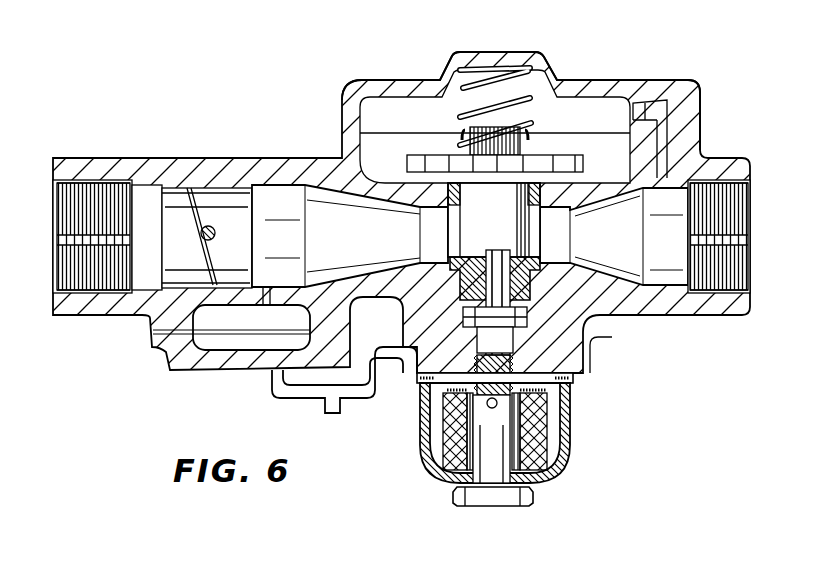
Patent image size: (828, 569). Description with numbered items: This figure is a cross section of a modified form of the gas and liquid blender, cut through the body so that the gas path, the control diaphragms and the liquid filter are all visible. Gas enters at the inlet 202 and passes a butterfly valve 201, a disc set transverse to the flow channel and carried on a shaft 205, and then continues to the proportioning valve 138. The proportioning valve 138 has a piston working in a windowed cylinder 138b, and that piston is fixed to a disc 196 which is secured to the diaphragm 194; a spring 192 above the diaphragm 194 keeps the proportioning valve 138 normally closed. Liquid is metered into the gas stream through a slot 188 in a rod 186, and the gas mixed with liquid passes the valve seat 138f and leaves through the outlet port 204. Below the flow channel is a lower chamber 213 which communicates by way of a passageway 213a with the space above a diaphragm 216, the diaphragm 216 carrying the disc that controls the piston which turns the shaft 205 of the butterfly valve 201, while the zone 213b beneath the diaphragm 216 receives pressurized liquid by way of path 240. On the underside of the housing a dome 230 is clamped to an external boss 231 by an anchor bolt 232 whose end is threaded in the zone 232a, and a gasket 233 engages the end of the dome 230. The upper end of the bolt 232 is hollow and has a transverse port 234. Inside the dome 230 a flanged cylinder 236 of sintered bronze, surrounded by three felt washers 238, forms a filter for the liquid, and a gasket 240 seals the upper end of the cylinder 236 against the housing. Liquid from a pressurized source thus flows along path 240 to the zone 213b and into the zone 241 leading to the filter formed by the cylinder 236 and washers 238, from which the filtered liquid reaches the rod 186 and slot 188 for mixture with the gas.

The proportioning valve 138 is at (494, 220).
The windowed cylinder 138b is at (447, 258).
The valve seat 138f is at (548, 263).
The rod 186 is at (513, 340).
The slot 188 is at (473, 342).
The spring 192 is at (509, 53).
The diaphragm 194 is at (573, 142).
The disc 196 is at (586, 166).
The butterfly valve 201 is at (192, 236).
The inlet 202 is at (73, 272).
The outlet port 204 is at (713, 277).
The shaft 205 is at (212, 226).
The lower chamber 213 is at (233, 329).
The passageway 213a is at (262, 313).
The zone below diaphragm 213b is at (238, 343).
The diaphragm 216 is at (208, 340).
The dome 230 is at (490, 458).
The external boss 231 is at (587, 327).
The anchor bolt 232 is at (493, 497).
The threaded zone 232a is at (511, 361).
The gasket 233 is at (585, 360).
The transverse port 234 is at (492, 420).
The flanged cylinder 236 is at (447, 470).
The felt washers 238 is at (452, 446).
The gasket 240 is at (333, 412).
The zone 241 is at (447, 381).